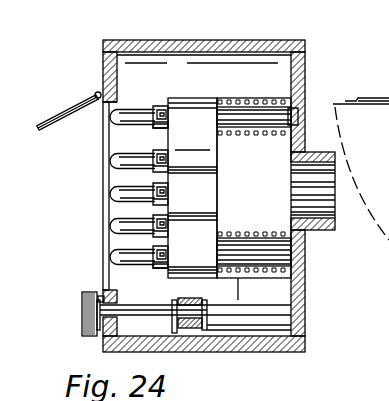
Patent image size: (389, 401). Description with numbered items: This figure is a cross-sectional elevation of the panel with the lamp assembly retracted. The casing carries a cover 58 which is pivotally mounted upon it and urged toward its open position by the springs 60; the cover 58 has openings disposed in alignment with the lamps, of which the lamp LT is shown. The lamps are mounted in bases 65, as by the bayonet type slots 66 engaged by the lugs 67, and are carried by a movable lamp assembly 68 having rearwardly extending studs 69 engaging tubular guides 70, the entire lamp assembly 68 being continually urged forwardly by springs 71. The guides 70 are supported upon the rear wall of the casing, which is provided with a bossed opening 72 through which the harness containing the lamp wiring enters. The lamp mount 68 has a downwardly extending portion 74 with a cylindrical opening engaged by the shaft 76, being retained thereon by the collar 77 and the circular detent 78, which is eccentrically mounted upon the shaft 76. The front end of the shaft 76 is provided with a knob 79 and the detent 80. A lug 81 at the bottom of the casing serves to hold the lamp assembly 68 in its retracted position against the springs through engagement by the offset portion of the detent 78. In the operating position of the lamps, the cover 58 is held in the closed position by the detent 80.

The cover 58 is at (62, 112).
The springs 60 is at (96, 92).
The lamp LT is at (110, 162).
The bases 65 is at (162, 107).
The bayonet type slots 66 is at (160, 267).
The lugs 67 is at (160, 129).
The movable lamp assembly 68 is at (193, 109).
The rearwardly extending studs 69 is at (218, 278).
The tubular guides 70 is at (242, 246).
The springs 71 is at (235, 103).
The bossed opening 72 is at (323, 195).
The downwardly extending portion 74 is at (197, 293).
The shaft 76 is at (125, 308).
The collar 77 is at (206, 318).
The circular detent 78 is at (176, 306).
The knob 79 is at (80, 330).
The detent 80 is at (100, 298).
The lug 81 is at (163, 345).